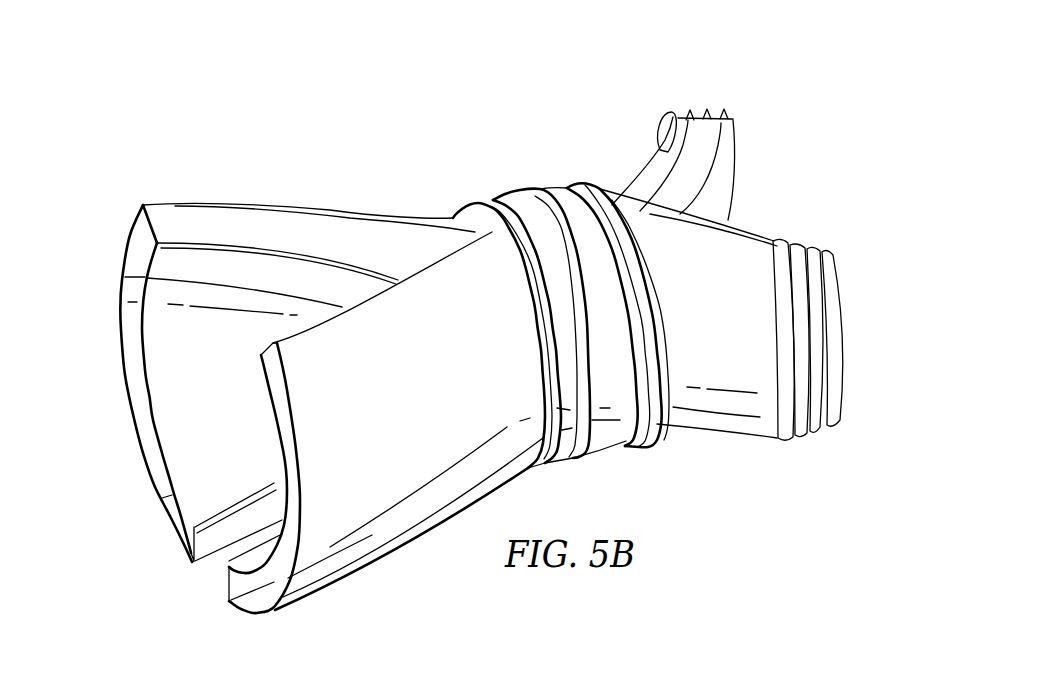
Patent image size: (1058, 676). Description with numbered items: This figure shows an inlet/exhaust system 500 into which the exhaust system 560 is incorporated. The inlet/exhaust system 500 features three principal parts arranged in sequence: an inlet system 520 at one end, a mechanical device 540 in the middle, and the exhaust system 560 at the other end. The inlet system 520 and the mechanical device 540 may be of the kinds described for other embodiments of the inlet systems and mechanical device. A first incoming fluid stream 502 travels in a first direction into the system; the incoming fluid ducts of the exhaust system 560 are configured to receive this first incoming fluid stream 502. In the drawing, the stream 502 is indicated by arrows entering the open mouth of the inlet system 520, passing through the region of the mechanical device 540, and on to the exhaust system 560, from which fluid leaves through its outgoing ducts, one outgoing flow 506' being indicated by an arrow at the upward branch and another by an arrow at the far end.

The inlet/exhaust system 500 is at (396, 134).
The first incoming fluid stream 502 is at (108, 347).
The inlet system 520 is at (430, 421).
The mechanical device 540 is at (574, 168).
The exhaust system 560 is at (741, 342).
The branch outlet flow 506' is at (674, 68).